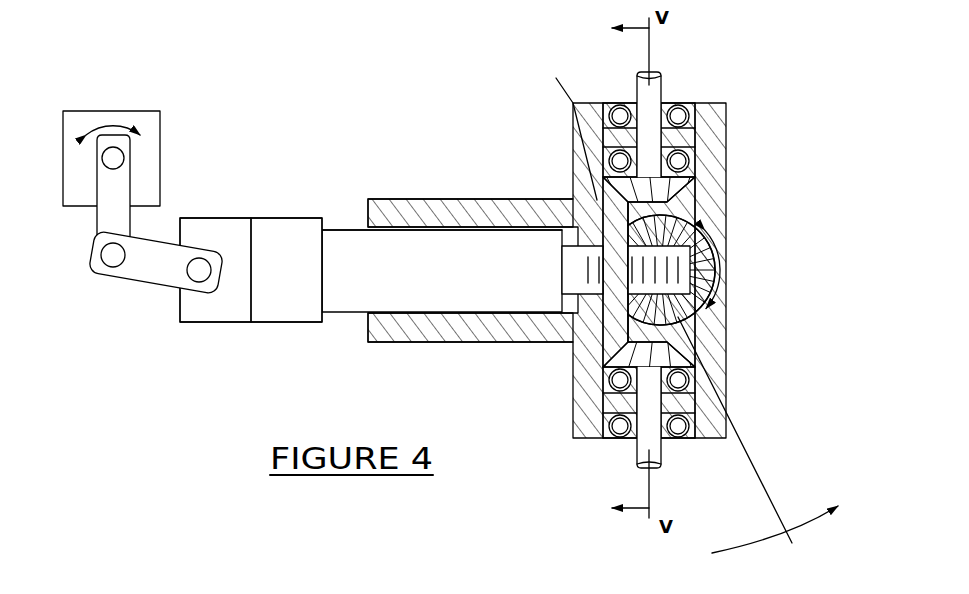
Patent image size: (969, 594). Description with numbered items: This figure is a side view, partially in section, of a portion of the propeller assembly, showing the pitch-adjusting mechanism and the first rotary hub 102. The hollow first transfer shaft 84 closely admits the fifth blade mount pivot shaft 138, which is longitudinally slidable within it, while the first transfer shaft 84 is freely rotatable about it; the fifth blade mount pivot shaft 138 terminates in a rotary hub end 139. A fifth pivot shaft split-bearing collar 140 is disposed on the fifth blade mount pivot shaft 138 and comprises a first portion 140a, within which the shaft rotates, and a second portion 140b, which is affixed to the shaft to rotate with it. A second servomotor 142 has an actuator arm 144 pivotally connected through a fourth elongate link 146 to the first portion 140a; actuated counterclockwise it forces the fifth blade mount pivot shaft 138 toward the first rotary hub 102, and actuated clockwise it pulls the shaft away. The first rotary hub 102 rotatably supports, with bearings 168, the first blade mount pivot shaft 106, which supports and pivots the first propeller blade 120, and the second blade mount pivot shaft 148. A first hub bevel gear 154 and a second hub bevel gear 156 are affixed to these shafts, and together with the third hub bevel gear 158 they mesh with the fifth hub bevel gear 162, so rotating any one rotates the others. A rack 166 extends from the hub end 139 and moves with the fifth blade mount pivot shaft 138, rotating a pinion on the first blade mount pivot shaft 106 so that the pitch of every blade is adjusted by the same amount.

The first transfer shaft 84 is at (452, 199).
The first rotary hub 102 is at (703, 102).
The first blade mount pivot shaft 106 is at (637, 462).
The first propeller blade 120 is at (753, 457).
The fifth blade mount pivot shaft 138 is at (359, 230).
The rotary hub end 139 is at (538, 238).
The fifth pivot shaft split-bearing collar 140 is at (253, 196).
The first portion 140a is at (218, 323).
The second portion 140b is at (283, 323).
The second servomotor 142 is at (140, 111).
The actuator arm 144 is at (93, 222).
The fourth elongate link 146 is at (153, 283).
The second blade mount pivot shaft 148 is at (662, 85).
The first hub bevel gear 154 is at (700, 332).
The second hub bevel gear 156 is at (703, 200).
The third hub bevel gear 158 is at (708, 272).
The fifth hub bevel gear 162 is at (602, 345).
The rack 166 is at (705, 316).
The bearings 168 is at (695, 163).